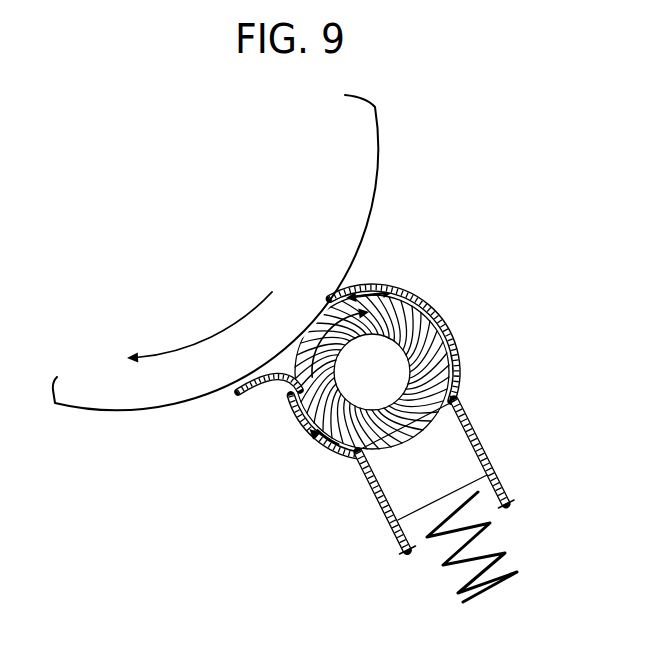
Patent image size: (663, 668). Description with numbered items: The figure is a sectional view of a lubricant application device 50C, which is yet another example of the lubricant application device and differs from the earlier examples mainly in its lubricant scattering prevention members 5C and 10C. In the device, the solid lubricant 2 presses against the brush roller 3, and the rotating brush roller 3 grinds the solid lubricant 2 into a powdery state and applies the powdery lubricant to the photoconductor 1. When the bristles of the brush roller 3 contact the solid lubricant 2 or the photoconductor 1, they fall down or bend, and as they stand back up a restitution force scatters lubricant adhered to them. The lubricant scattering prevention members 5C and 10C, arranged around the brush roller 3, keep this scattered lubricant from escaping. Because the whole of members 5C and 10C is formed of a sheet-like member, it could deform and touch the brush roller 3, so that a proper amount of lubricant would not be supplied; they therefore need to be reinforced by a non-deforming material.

The photoconductor 1 is at (213, 250).
The solid lubricant 2 is at (463, 442).
The brush roller 3 is at (303, 388).
The lubricant scattering prevention member 5C is at (308, 427).
The lubricant scattering prevention member 10C is at (444, 321).
The lubricant application device 50C is at (488, 193).